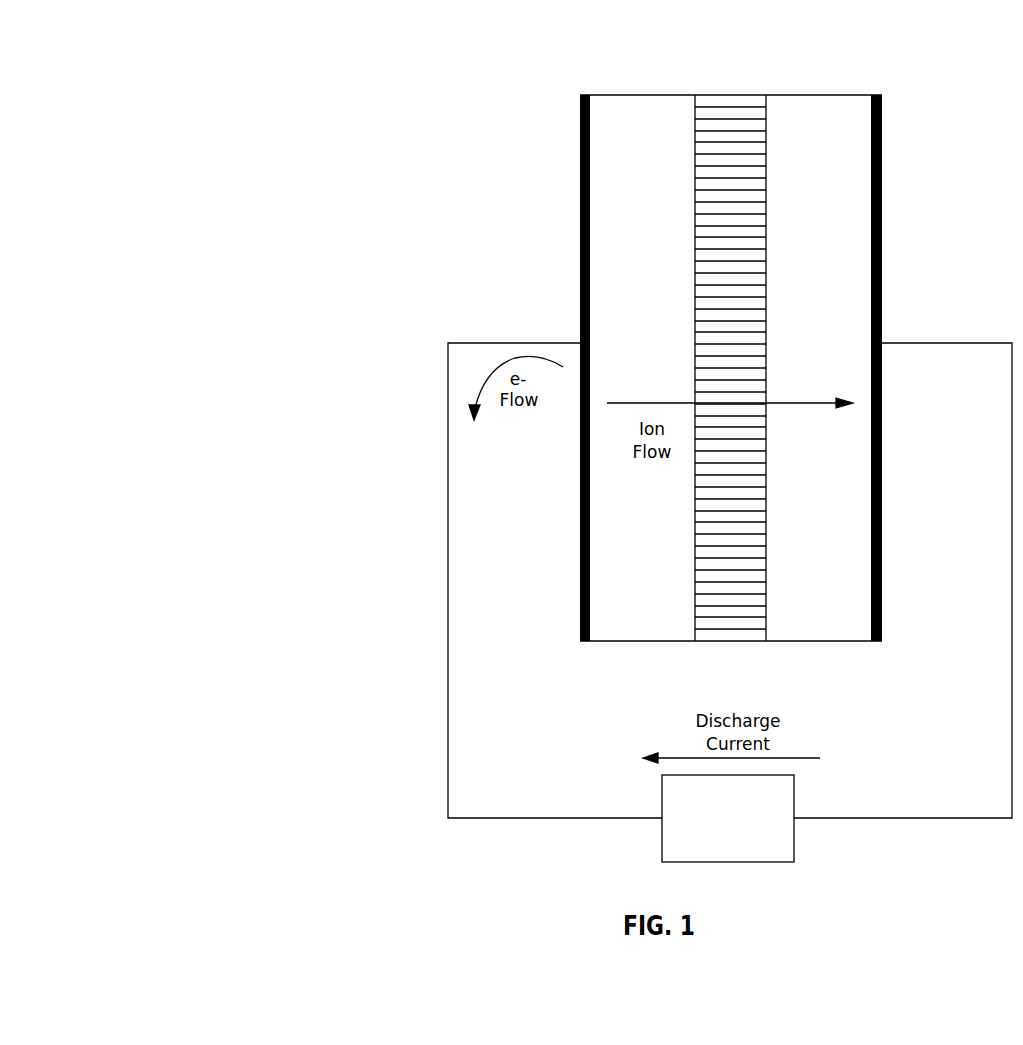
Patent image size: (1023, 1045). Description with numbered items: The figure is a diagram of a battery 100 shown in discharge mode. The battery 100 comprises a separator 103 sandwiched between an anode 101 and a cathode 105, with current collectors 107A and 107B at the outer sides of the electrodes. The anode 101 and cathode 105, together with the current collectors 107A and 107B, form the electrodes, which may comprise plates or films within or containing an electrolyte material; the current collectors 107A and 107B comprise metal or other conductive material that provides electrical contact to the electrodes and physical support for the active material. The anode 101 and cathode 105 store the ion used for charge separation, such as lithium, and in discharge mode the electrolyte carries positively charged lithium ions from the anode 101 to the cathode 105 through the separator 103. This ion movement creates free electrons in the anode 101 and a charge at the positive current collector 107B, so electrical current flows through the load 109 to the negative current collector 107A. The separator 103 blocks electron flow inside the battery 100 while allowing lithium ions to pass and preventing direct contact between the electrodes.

The battery 100 is at (275, 193).
The anode 101 is at (642, 368).
The separator 103 is at (730, 95).
The cathode 105 is at (818, 368).
The current collector 107A is at (580, 112).
The current collector 107B is at (883, 115).
The load 109 is at (728, 818).